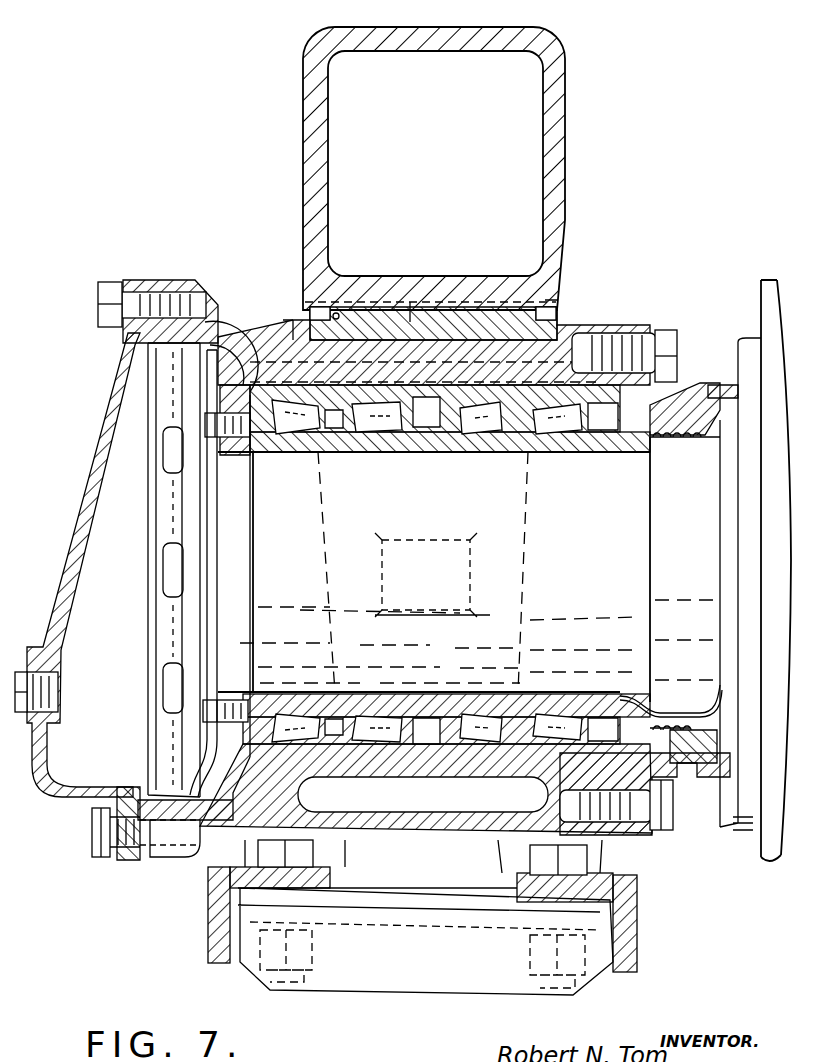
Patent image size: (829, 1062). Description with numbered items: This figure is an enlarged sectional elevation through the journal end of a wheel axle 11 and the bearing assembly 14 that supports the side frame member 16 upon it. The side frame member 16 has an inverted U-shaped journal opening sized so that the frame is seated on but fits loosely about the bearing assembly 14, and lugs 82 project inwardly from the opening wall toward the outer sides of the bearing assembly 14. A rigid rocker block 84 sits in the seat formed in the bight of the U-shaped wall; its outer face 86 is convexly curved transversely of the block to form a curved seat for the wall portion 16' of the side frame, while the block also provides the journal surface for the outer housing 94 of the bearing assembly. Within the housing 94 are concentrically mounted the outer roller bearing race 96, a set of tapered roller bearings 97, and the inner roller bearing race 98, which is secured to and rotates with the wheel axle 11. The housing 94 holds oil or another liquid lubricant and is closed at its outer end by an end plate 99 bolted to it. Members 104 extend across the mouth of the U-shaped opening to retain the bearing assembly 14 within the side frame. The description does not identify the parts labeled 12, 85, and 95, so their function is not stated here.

The wheel axle 11 is at (235, 630).
The axle bracket 12 is at (763, 304).
The bearing assembly 14 is at (100, 407).
The side frame member 16 is at (470, 168).
The wall portion 16' is at (579, 293).
The lugs 82 is at (438, 536).
The rocker block 84 is at (488, 320).
The mounting element 85 is at (412, 328).
The outer face 86 is at (342, 316).
The outer housing 94 is at (292, 328).
The hub body 95 is at (478, 350).
The outer roller bearing race 96 is at (442, 778).
The tapered roller bearings 97 is at (376, 724).
The inner roller bearing race 98 is at (372, 440).
The end plate 99 is at (75, 548).
The members 104 is at (217, 937).